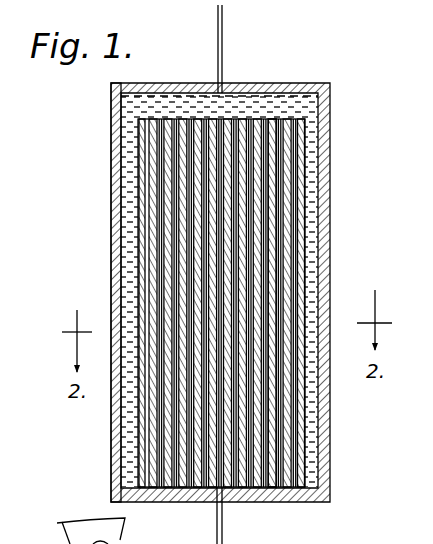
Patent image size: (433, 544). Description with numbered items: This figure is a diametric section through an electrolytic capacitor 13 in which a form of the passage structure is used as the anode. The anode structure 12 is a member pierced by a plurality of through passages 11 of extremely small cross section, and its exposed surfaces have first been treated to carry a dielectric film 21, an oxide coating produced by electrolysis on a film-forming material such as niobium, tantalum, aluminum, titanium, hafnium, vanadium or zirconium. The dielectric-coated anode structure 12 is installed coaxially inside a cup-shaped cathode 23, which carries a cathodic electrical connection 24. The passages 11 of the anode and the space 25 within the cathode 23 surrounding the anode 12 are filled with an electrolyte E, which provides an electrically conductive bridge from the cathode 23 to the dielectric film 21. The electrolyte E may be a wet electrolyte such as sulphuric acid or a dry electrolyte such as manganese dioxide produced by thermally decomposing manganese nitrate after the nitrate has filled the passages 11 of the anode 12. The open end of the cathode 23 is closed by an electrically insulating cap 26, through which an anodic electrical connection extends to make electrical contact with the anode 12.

The through passages 11 is at (287, 221).
The anode structure 12 is at (310, 275).
The electrolytic capacitor 13 is at (333, 138).
The dielectric film 21 is at (300, 248).
The cup-shaped cathode 23 is at (115, 452).
The cathodic electrical connection 24 is at (223, 48).
The space 25 is at (290, 104).
The electrically insulating cap 26 is at (258, 502).
The electrolyte E is at (137, 108).